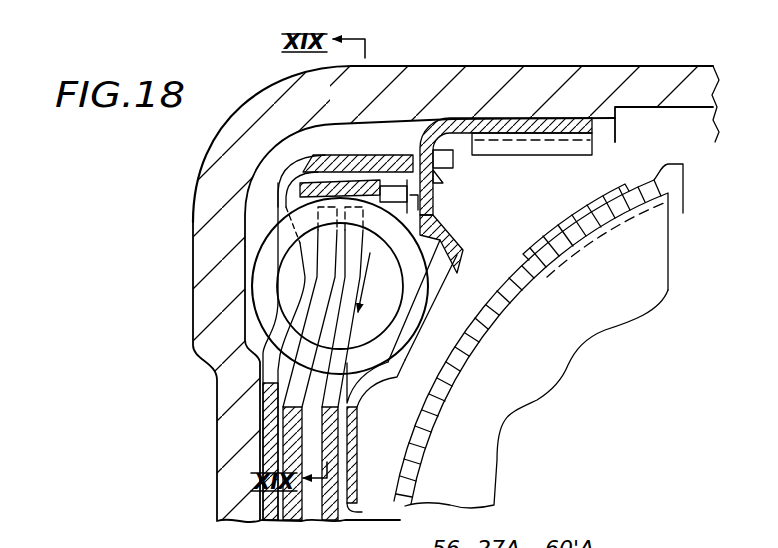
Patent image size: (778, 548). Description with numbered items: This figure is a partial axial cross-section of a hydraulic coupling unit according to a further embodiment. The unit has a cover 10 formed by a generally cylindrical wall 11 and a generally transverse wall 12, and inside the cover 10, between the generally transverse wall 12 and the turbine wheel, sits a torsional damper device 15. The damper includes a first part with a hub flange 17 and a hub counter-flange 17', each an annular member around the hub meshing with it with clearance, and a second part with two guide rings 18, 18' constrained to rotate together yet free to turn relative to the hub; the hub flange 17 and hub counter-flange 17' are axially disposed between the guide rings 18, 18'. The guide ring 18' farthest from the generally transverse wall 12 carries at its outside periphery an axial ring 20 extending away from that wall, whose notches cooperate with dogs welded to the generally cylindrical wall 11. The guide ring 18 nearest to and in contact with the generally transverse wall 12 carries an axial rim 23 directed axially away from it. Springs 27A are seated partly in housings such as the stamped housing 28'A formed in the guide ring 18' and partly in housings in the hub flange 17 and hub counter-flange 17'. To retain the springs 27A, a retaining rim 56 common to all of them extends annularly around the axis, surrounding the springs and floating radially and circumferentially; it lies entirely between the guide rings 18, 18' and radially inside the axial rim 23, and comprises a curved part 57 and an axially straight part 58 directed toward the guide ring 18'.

The cover 10 is at (252, 80).
The generally cylindrical wall 11 is at (581, 64).
The generally transverse wall 12 is at (214, 429).
The torsional damper device 15 is at (460, 284).
The hub flange 17 is at (264, 477).
The hub counter-flange 17' is at (340, 477).
The guide ring 18 is at (241, 351).
The guide ring 18' is at (409, 436).
The axial ring 20 is at (524, 117).
The axial rim 23 is at (373, 154).
The spring 27A is at (425, 318).
The housing 28'A is at (396, 307).
The retaining rim 56 is at (346, 176).
The curved part 57 is at (325, 168).
The axially straight part 58 is at (393, 185).